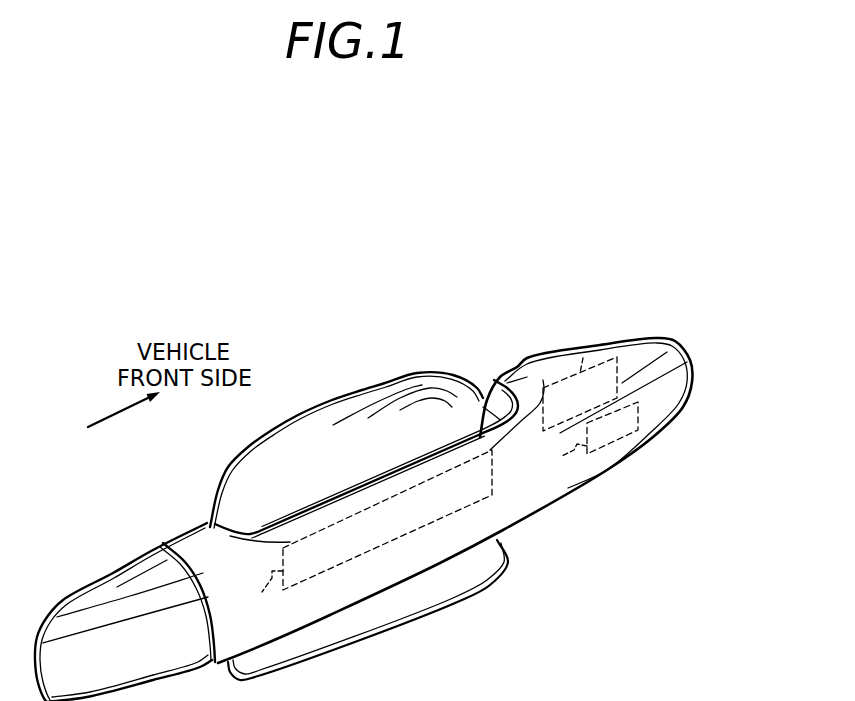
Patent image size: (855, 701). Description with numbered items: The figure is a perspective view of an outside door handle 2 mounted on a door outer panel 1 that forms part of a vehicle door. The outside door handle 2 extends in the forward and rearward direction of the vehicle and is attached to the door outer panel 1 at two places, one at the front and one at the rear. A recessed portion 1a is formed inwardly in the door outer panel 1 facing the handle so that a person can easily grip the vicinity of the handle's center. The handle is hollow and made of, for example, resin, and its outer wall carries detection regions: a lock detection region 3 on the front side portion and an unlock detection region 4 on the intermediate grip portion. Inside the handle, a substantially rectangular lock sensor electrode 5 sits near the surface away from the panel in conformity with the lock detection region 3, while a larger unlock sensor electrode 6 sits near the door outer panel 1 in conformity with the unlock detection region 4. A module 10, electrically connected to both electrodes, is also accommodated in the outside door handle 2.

The door outer panel 1 is at (418, 357).
The recessed portion 1a is at (318, 434).
The outside door handle 2 is at (196, 536).
The lock detection region 3 is at (546, 366).
The unlock detection region 4 is at (360, 482).
The lock sensor electrode 5 is at (565, 456).
The unlock sensor electrode 6 is at (260, 593).
The module 10 is at (590, 346).